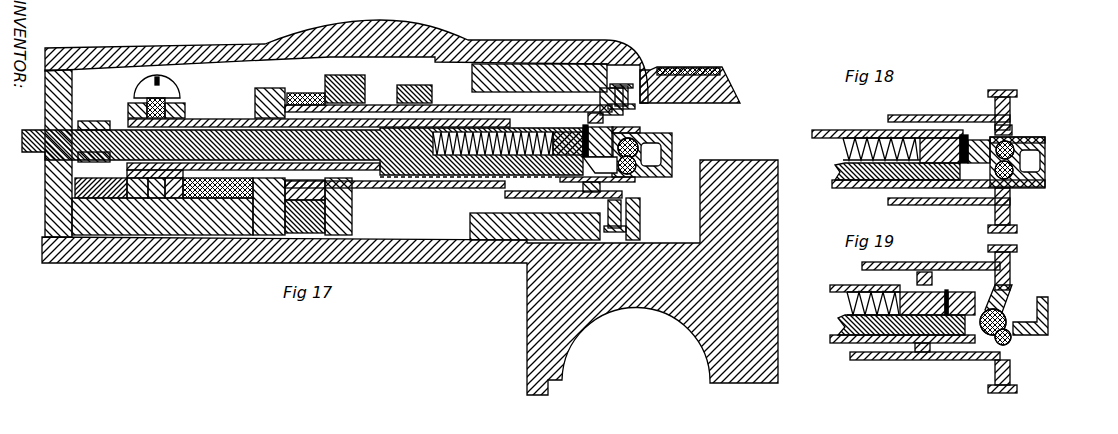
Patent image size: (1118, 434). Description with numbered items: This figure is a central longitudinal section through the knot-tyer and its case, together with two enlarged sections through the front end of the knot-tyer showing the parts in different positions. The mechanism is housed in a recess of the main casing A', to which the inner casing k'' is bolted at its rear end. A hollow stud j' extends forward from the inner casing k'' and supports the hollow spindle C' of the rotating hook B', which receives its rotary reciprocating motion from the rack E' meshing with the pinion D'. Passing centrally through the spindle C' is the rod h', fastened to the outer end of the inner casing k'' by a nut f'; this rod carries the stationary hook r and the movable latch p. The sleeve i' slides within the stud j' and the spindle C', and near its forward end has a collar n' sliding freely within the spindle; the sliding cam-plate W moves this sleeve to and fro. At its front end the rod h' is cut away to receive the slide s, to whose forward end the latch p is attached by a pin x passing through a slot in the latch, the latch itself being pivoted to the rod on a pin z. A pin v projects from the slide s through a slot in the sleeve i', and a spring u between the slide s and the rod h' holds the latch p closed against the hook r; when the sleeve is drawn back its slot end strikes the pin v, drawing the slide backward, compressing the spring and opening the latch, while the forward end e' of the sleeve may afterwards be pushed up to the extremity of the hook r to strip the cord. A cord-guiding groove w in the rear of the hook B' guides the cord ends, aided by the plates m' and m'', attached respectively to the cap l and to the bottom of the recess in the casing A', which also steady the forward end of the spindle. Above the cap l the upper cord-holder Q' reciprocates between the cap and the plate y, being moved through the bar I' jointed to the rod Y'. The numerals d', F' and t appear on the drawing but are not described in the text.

In FIG. 17, the cap l is at (346, 58).
In FIG. 17, the upper cord-holder Q' is at (690, 76).
In FIG. 17, the plate y is at (688, 61).
In FIG. 17, the inner casing k'' is at (334, 150).
In FIG. 17, the cord-guiding groove w is at (619, 154).
In FIG. 18, the cord-guiding groove w is at (952, 210).
In FIG. 19, the cord-guiding groove w is at (933, 372).
In FIG. 17, the rotating hook B' is at (637, 114).
In FIG. 18, the rotating hook B' is at (1012, 110).
In FIG. 19, the rotating hook B' is at (1012, 267).
In FIG. 17, the screw d' is at (166, 96).
In FIG. 17, the block F' is at (169, 107).
In FIG. 17, the sleeve i' is at (319, 114).
In FIG. 18, the sleeve i' is at (887, 125).
In FIG. 19, the sleeve i' is at (865, 277).
In FIG. 17, the pinion D' is at (306, 87).
In FIG. 17, the rod Y' is at (354, 82).
In FIG. 17, the hollow stud j' is at (388, 149).
In FIG. 17, the bar I' is at (423, 87).
In FIG. 17, the hollow spindle C' is at (448, 100).
In FIG. 18, the hollow spindle C' is at (949, 105).
In FIG. 19, the hollow spindle C' is at (931, 257).
In FIG. 17, the plate m' is at (566, 96).
In FIG. 17, the collar n' is at (601, 121).
In FIG. 18, the collar n' is at (1012, 128).
In FIG. 19, the collar n' is at (920, 298).
In FIG. 17, the rod h' is at (293, 143).
In FIG. 18, the rod h' is at (888, 169).
In FIG. 19, the rod h' is at (901, 325).
In FIG. 17, the spring u is at (508, 132).
In FIG. 18, the spring u is at (891, 150).
In FIG. 19, the spring u is at (901, 303).
In FIG. 17, the pin v is at (579, 136).
In FIG. 18, the pin v is at (969, 140).
In FIG. 19, the pin v is at (941, 292).
In FIG. 17, the slide s is at (387, 171).
In FIG. 18, the slide s is at (984, 148).
In FIG. 19, the slide s is at (980, 298).
In FIG. 17, the pin x is at (634, 109).
In FIG. 19, the pin x is at (972, 330).
In FIG. 17, the stationary hook r is at (647, 155).
In FIG. 18, the stationary hook r is at (1025, 162).
In FIG. 19, the stationary hook r is at (1036, 316).
In FIG. 17, the latch p is at (639, 156).
In FIG. 18, the latch p is at (1017, 160).
In FIG. 19, the latch p is at (1000, 315).
In FIG. 17, the pin z is at (600, 164).
In FIG. 18, the pin z is at (990, 174).
In FIG. 17, the forward end of sleeve e' is at (513, 187).
In FIG. 18, the forward end of sleeve e' is at (943, 192).
In FIG. 19, the forward end of sleeve e' is at (912, 344).
In FIG. 17, the block t is at (348, 189).
In FIG. 17, the nut f' is at (183, 198).
In FIG. 17, the rack E' is at (329, 206).
In FIG. 17, the plate m'' is at (555, 218).
In FIG. 17, the sliding cam-plate W is at (394, 277).
In FIG. 17, the main casing A' is at (410, 277).